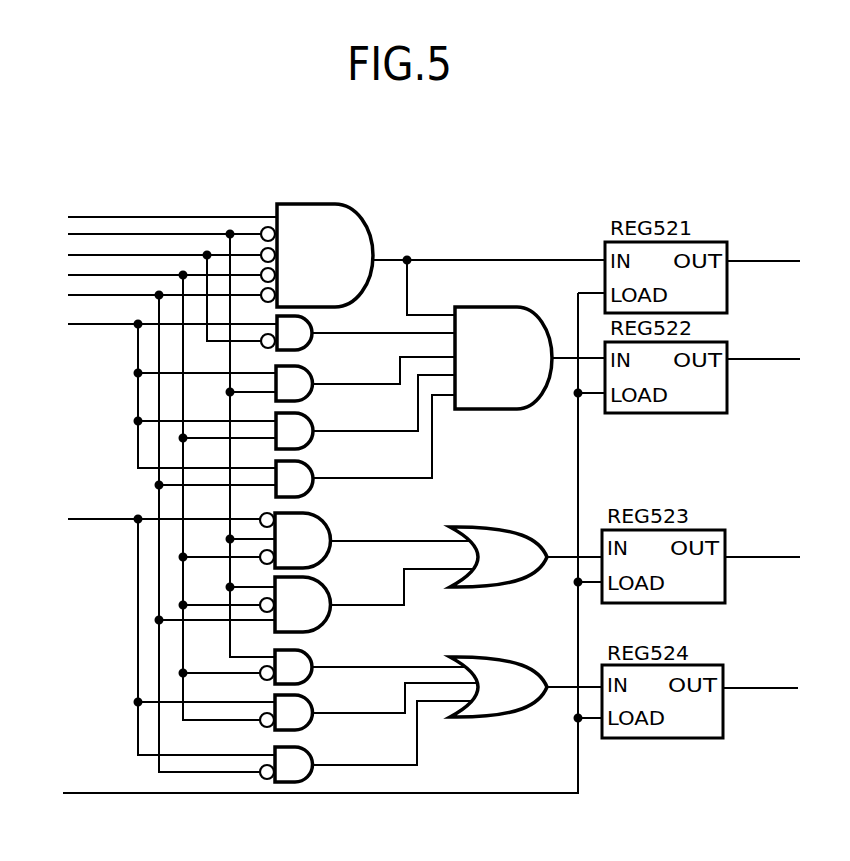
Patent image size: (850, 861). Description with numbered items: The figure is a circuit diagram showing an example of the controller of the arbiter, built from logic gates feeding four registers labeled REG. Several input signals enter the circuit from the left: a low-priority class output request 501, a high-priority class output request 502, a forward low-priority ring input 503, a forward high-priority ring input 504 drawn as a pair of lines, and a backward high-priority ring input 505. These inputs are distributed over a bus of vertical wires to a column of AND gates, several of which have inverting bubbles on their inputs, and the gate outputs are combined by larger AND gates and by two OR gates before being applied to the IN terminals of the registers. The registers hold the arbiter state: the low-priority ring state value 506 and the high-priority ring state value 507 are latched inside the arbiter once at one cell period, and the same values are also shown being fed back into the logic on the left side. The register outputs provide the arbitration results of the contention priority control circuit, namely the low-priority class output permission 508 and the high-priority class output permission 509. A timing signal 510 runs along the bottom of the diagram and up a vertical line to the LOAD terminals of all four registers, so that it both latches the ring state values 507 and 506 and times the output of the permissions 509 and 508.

The low-priority class output request 501 is at (82, 217).
The high-priority class output request 502 is at (141, 233).
The forward low-priority ring input 503 is at (193, 253).
The forward high-priority ring input 504 is at (82, 295).
The backward high-priority ring input 505 is at (149, 389).
The low-priority ring state value 506 is at (97, 325).
The high-priority ring state value 507 is at (93, 518).
The low-priority class output permission 508 is at (770, 261).
The high-priority class output permission 509 is at (767, 557).
The timing signal 510 is at (95, 793).